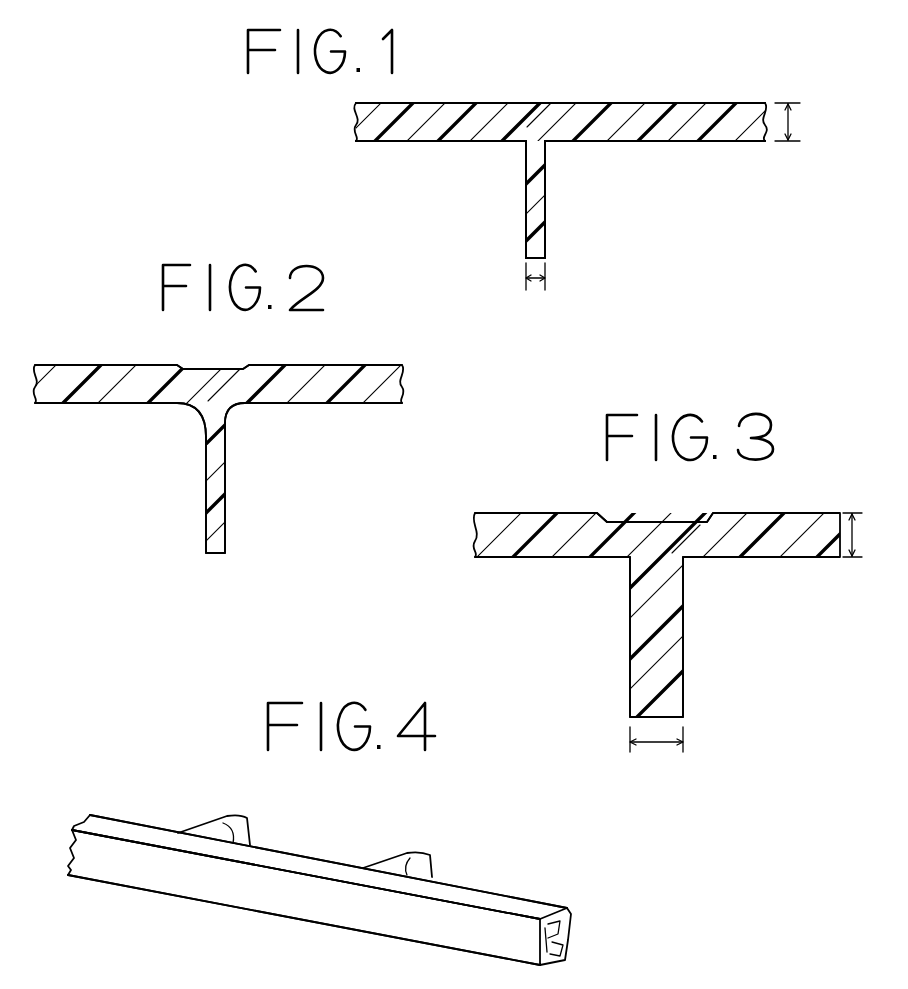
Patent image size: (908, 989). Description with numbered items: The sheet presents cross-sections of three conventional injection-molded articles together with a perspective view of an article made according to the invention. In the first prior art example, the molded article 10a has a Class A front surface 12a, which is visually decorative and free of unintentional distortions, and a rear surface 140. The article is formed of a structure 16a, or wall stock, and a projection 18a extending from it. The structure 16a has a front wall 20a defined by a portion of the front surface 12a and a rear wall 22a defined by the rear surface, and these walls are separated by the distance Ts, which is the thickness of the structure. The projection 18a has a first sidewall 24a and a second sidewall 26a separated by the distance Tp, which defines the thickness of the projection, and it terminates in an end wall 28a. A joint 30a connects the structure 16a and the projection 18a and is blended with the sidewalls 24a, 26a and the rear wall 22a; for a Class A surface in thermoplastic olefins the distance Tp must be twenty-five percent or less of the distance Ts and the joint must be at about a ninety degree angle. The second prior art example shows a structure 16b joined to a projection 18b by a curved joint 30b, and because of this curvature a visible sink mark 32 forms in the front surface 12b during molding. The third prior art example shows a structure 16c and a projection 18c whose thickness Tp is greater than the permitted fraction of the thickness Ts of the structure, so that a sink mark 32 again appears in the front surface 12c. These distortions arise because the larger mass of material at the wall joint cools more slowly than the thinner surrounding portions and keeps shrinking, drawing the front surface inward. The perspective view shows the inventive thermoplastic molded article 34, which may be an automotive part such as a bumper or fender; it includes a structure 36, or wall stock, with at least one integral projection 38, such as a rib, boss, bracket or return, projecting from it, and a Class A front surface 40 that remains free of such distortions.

In FIG. 1, the molded article 10a is at (697, 83).
In FIG. 1, the front surface 12a is at (478, 102).
In FIG. 1, the structure 16a is at (551, 120).
In FIG. 1, the projection 18a is at (533, 220).
In FIG. 1, the front wall 20a is at (368, 102).
In FIG. 1, the rear wall 22a is at (373, 141).
In FIG. 1, the first sidewall 24a is at (526, 217).
In FIG. 1, the second sidewall 26a is at (545, 186).
In FIG. 1, the end wall 28a is at (543, 260).
In FIG. 1, the joint 30a is at (518, 146).
In FIG. 1, the rear surface 140 is at (423, 141).
In FIG. 1, the thickness of structure Ts is at (797, 122).
In FIG. 3, the thickness of structure Ts is at (861, 535).
In FIG. 1, the thickness of projection Tp is at (537, 289).
In FIG. 3, the thickness of projection Tp is at (656, 754).
In FIG. 2, the front surface 12b is at (85, 365).
In FIG. 2, the structure 16b is at (243, 387).
In FIG. 2, the projection 18b is at (210, 485).
In FIG. 2, the joint 30b is at (188, 422).
In FIG. 2, the sink mark 32 is at (202, 367).
In FIG. 3, the sink mark 32 is at (645, 520).
In FIG. 3, the front surface 12c is at (518, 513).
In FIG. 3, the structure 16c is at (712, 533).
In FIG. 3, the projection 18c is at (650, 647).
In FIG. 4, the molded article 34 is at (466, 867).
In FIG. 4, the structure 36 is at (253, 855).
In FIG. 4, the integral projection 38 is at (222, 823).
In FIG. 4, the front surface 40 is at (180, 868).